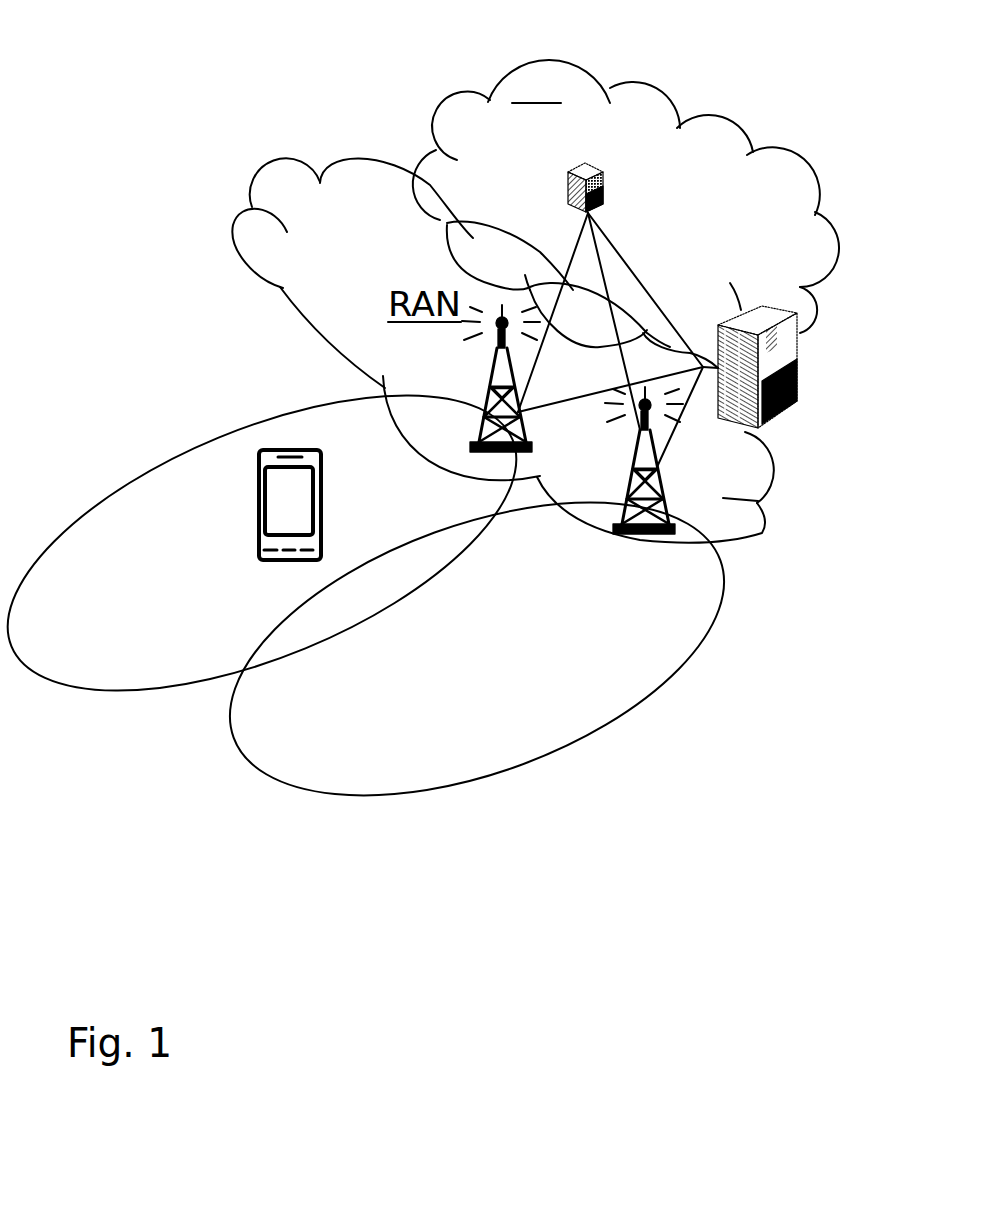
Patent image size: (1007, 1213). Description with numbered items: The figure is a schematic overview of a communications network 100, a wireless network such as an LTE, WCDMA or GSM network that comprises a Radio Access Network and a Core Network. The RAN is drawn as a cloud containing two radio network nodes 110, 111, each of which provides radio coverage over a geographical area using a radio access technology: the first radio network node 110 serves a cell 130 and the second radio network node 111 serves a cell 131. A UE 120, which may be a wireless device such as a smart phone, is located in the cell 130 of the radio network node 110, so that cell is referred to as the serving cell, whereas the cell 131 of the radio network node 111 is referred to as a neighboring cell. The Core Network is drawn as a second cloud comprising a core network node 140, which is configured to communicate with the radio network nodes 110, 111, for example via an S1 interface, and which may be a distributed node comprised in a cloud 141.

The communications network 100 is at (300, 85).
The radio network node 110 is at (490, 393).
The radio network node 111 is at (663, 477).
The UE 120 is at (327, 470).
The cell 130 is at (208, 562).
The cell 131 is at (601, 672).
The core network node 140 is at (603, 188).
The cloud 141 is at (778, 232).